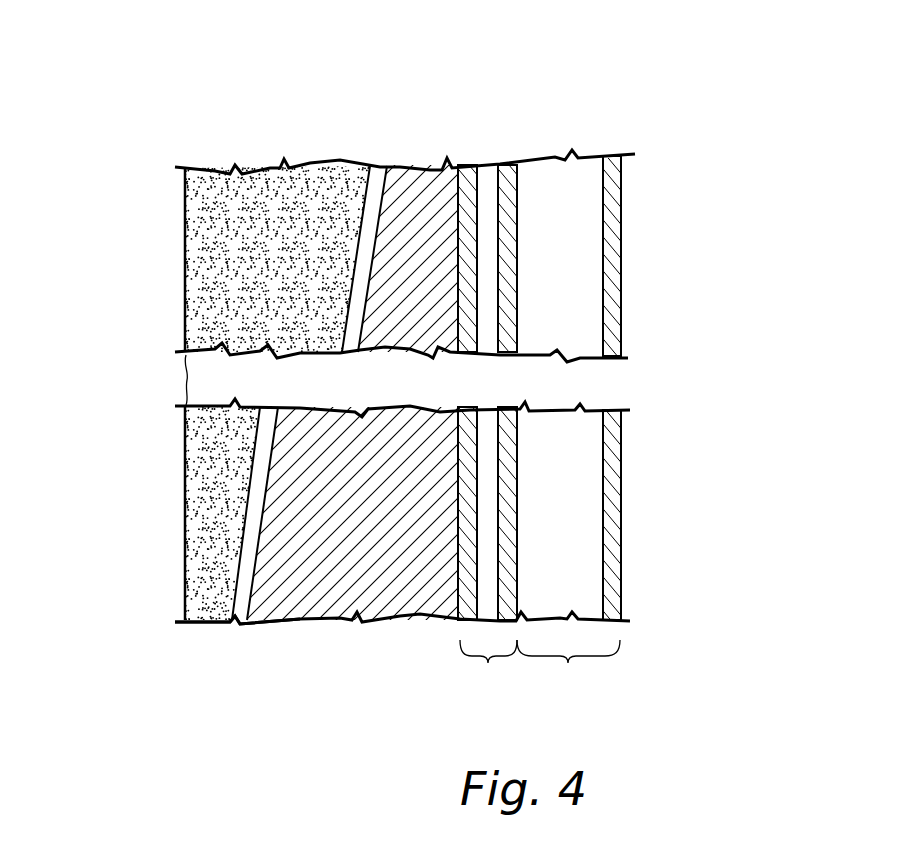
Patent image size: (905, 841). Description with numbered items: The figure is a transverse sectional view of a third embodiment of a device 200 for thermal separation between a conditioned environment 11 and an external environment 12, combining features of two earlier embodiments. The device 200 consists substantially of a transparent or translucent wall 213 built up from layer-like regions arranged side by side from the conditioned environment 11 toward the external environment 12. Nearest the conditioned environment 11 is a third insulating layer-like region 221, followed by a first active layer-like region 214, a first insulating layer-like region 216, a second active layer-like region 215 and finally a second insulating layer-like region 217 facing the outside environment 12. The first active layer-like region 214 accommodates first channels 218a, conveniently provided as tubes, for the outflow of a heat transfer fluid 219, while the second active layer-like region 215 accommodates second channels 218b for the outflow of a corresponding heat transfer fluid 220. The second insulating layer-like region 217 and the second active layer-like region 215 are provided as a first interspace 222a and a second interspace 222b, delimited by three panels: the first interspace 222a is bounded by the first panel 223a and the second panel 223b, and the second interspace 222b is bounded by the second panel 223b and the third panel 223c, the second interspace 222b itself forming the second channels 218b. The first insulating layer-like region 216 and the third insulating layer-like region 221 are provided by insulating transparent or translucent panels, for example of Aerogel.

The device for thermal separation 200 is at (641, 129).
The transparent or translucent wall 213 is at (183, 218).
The heat transfer fluid 219 is at (367, 223).
The first channels 218a is at (242, 459).
The second channels 218b is at (514, 539).
The third insulating layer-like region 221 is at (209, 568).
The first insulating layer-like region 216 is at (325, 545).
The third panel 223c is at (465, 205).
The second panel 223b is at (507, 176).
The first panel 223a is at (613, 176).
The second interspace 222b is at (487, 176).
The first interspace 222a is at (560, 198).
The heat transfer fluid 220 is at (487, 271).
The first active layer-like region 214 is at (227, 637).
The second active layer-like region 215 is at (488, 663).
The second insulating layer-like region 217 is at (568, 663).
The conditioned environment 11 is at (147, 394).
The external environment 12 is at (682, 391).